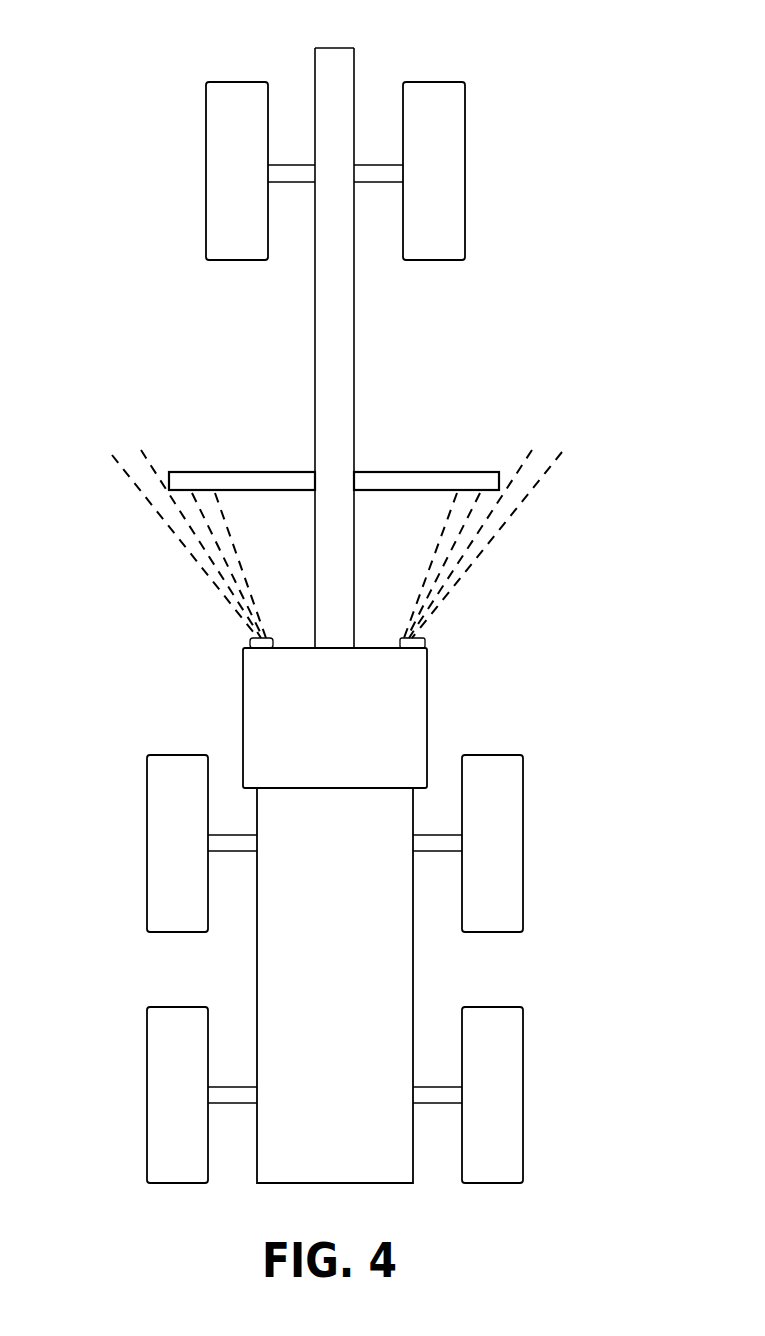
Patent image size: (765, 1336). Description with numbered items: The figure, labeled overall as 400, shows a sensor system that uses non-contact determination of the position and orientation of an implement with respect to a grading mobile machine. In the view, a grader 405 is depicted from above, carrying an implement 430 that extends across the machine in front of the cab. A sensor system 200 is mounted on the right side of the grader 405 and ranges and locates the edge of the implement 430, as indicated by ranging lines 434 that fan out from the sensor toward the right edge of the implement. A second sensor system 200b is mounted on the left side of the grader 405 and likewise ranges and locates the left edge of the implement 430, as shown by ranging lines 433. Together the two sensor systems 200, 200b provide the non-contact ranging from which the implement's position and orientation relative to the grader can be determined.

The agricultural vehicle 400 is at (140, 27).
The grader 405 is at (257, 960).
The implement 430 is at (373, 472).
The ranging lines 433 is at (212, 587).
The ranging lines 434 is at (490, 544).
The sensor system 200 is at (425, 647).
The sensor system 200b is at (252, 643).